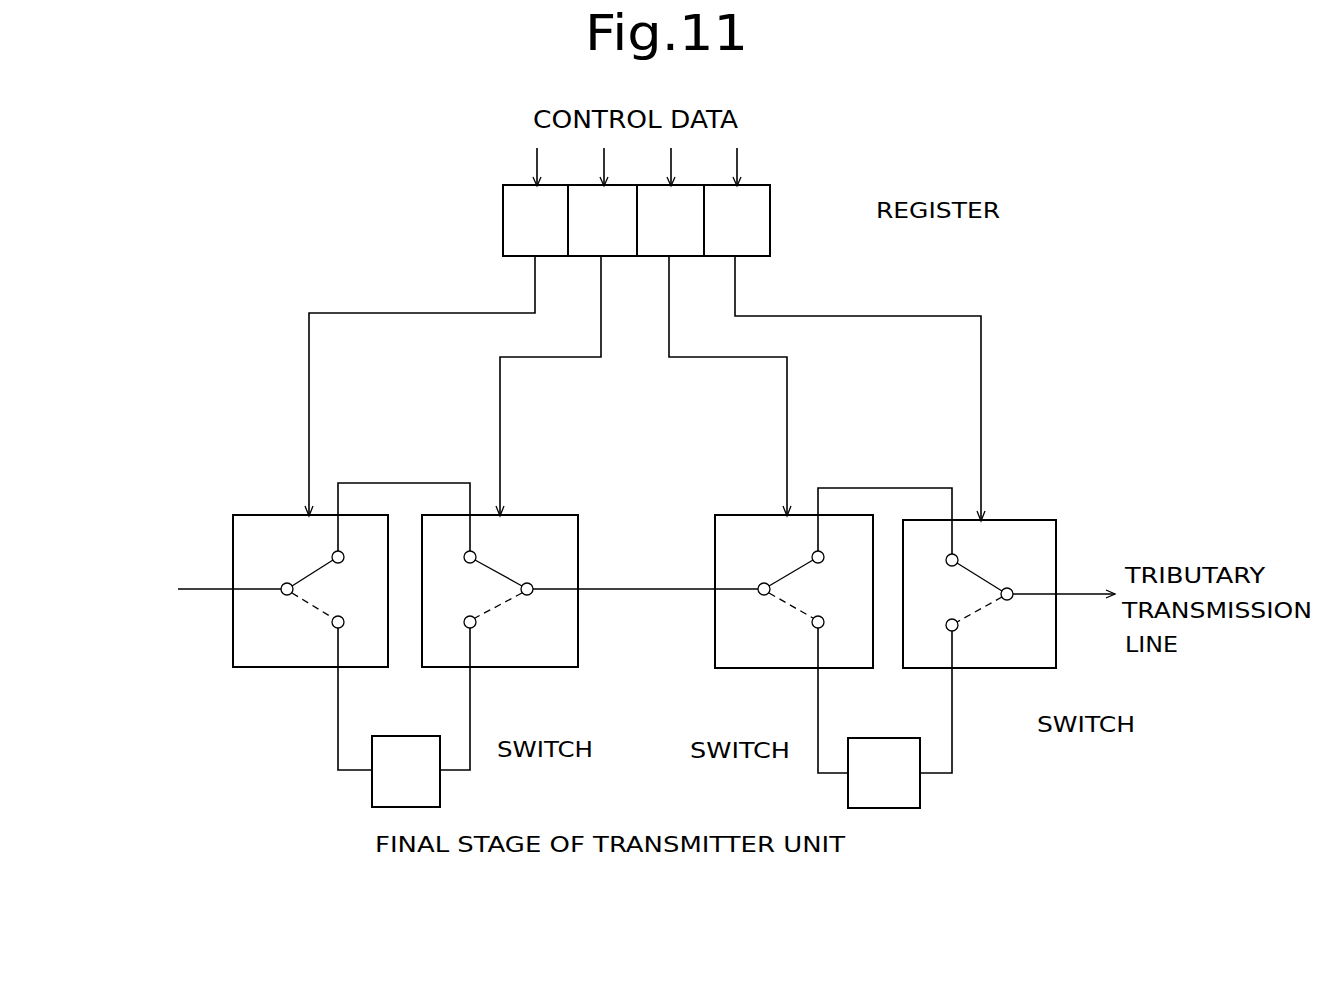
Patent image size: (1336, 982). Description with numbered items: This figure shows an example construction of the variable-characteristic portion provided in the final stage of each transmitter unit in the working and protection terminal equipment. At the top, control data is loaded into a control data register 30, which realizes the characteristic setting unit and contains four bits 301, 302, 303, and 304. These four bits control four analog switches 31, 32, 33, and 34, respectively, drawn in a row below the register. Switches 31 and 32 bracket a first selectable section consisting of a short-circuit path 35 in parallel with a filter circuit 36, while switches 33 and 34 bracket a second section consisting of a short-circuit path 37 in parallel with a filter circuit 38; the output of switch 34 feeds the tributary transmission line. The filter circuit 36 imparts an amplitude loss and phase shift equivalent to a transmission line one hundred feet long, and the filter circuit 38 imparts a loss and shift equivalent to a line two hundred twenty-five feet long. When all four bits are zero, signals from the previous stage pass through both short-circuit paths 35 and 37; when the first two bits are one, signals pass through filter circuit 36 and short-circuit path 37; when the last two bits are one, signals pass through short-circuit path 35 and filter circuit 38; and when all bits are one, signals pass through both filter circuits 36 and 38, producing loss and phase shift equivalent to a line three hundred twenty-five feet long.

The control data register 30 is at (864, 224).
The first bit of control data register 301 is at (503, 243).
The second bit of control data register 302 is at (583, 258).
The third bit of control data register 303 is at (651, 258).
The fourth bit of control data register 304 is at (772, 243).
The analog switch 31 is at (252, 670).
The analog switch 32 is at (556, 670).
The analog switch 33 is at (749, 672).
The analog switch 34 is at (1027, 675).
The short-circuit path 35 is at (404, 483).
The filter circuit 36 is at (372, 784).
The short-circuit path 37 is at (887, 488).
The filter circuit 38 is at (848, 788).